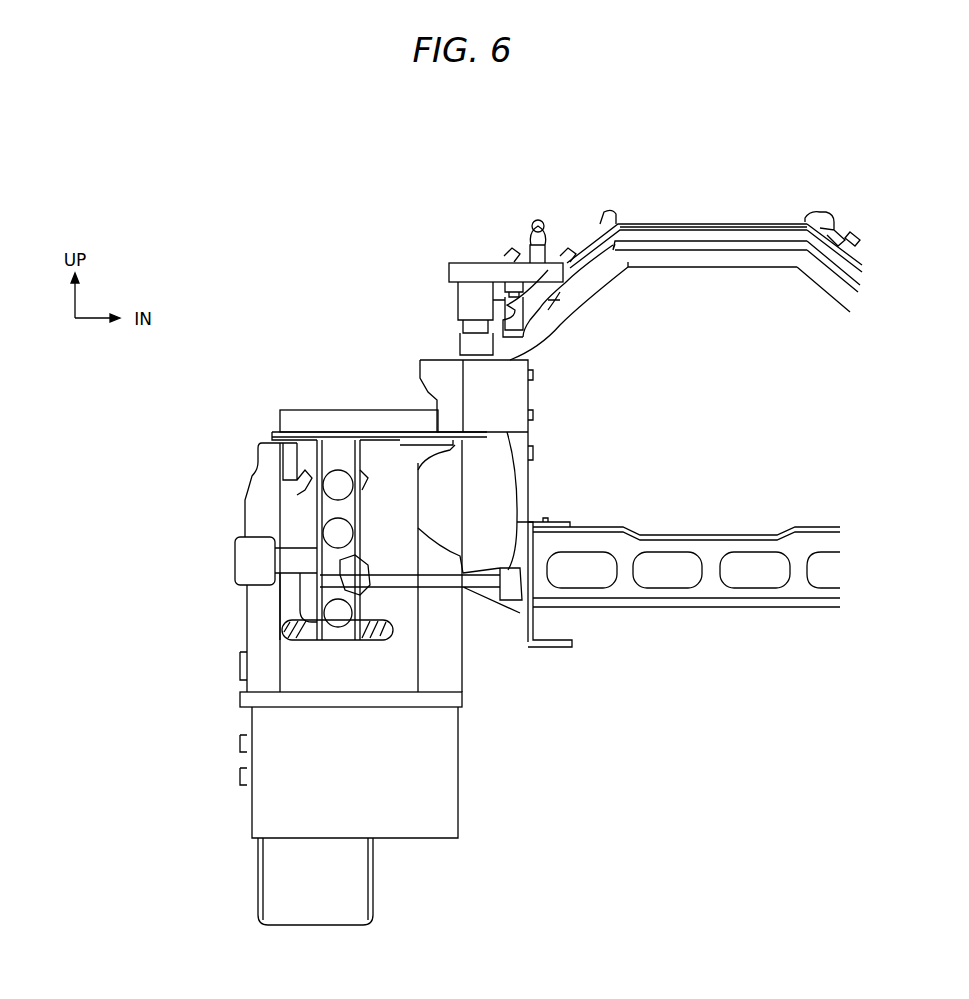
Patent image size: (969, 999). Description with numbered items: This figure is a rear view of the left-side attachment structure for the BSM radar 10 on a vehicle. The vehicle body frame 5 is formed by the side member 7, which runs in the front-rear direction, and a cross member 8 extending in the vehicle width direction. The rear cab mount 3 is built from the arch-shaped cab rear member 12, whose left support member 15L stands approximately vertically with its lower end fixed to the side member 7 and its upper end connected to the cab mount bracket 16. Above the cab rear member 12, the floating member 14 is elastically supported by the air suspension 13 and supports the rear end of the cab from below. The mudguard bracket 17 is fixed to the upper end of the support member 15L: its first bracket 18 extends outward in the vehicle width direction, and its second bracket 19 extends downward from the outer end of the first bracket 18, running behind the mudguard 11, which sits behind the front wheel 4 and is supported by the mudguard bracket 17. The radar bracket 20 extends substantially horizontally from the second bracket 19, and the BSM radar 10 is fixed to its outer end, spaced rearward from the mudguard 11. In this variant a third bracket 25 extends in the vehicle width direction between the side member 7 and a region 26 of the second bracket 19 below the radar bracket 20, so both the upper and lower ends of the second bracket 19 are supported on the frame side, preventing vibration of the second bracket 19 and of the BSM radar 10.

The rear cab mount 3 is at (720, 220).
The cab rear member 12 is at (632, 270).
The cab mount bracket 16 is at (695, 270).
The floating member 14 is at (480, 262).
The air suspension 13 is at (458, 305).
The left support member 15L is at (530, 395).
The first bracket 18 is at (330, 410).
The mudguard bracket 17 is at (288, 410).
The second bracket 19 is at (310, 515).
The BSM radar 10 is at (235, 555).
The mudguard 11 is at (240, 610).
The radar bracket 20 is at (295, 582).
The region 26 is at (310, 642).
The third bracket 25 is at (435, 595).
The side member 7 is at (555, 648).
The vehicle body frame 5 is at (742, 608).
The cross member 8 is at (690, 608).
The front wheel 4 is at (258, 890).